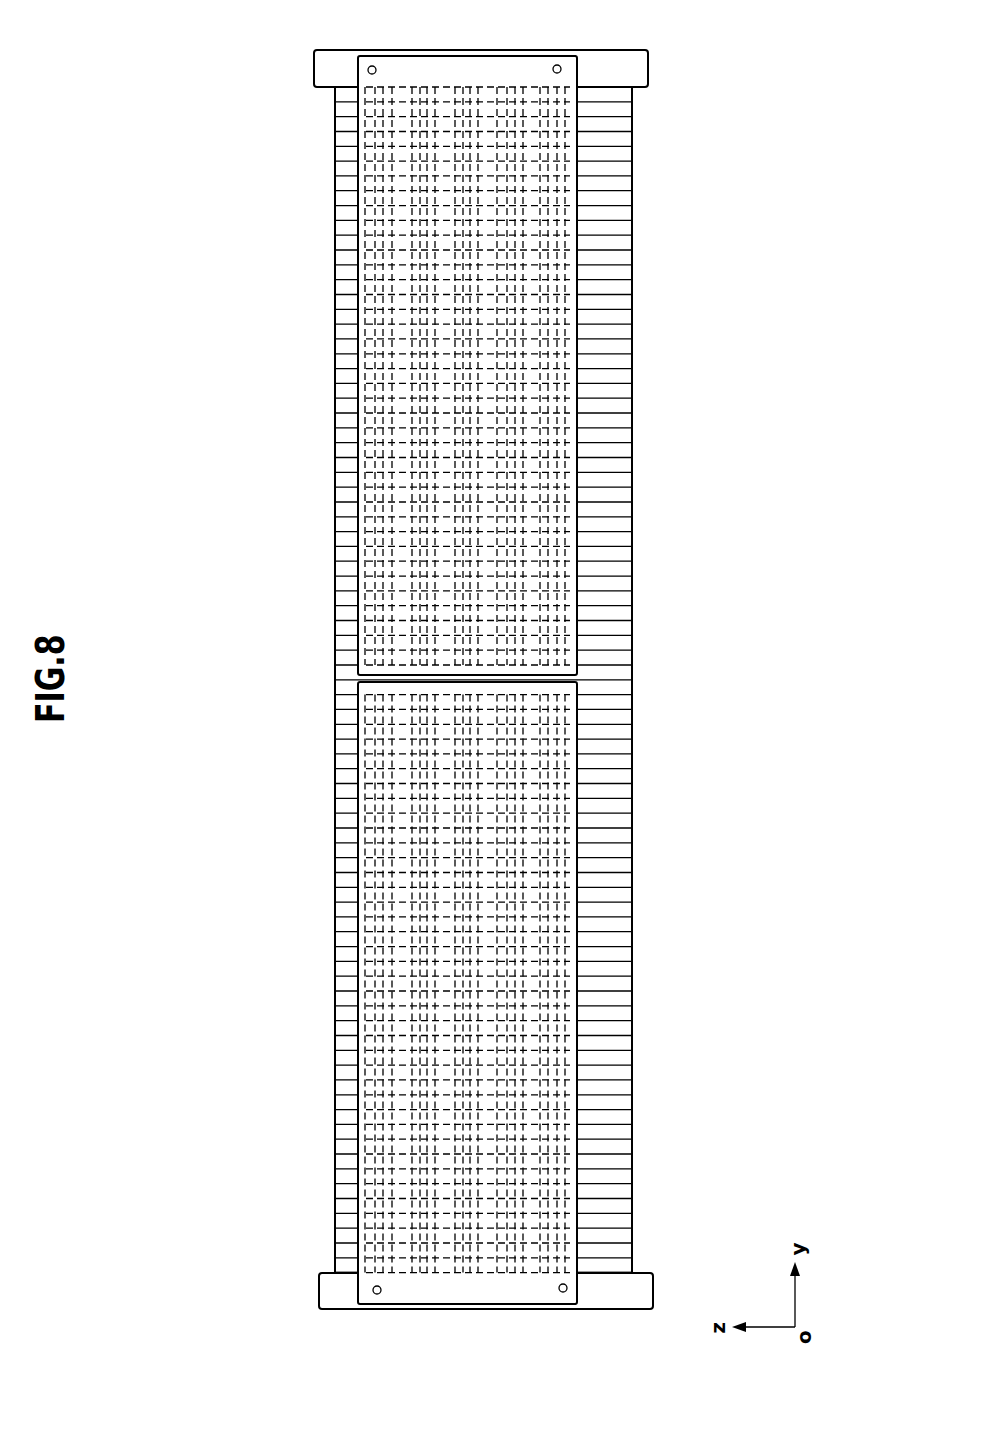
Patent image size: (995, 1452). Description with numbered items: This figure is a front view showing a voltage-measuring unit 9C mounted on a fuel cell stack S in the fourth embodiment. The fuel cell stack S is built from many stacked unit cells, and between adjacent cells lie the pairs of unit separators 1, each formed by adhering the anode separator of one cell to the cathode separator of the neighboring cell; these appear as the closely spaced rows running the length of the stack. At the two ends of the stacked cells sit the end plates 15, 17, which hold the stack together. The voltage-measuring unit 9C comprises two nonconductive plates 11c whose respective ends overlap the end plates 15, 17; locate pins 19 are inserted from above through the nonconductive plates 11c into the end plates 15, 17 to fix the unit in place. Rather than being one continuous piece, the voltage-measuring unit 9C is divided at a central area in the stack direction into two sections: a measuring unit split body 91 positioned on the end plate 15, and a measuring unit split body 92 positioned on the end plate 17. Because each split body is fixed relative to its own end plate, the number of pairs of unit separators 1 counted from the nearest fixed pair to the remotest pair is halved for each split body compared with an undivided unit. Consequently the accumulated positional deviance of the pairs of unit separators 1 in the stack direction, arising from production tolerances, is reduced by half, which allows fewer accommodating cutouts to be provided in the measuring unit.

The pair of unit separators 1 is at (350, 361).
The voltage-measuring unit 9C is at (248, 605).
The measuring unit split body 91 is at (360, 744).
The measuring unit split body 92 is at (362, 612).
The nonconductive plate 11c is at (538, 63).
The end plate 15 is at (321, 1290).
The end plate 17 is at (316, 70).
The locate pin 19 is at (368, 70).
The fuel cell stack S is at (318, 487).